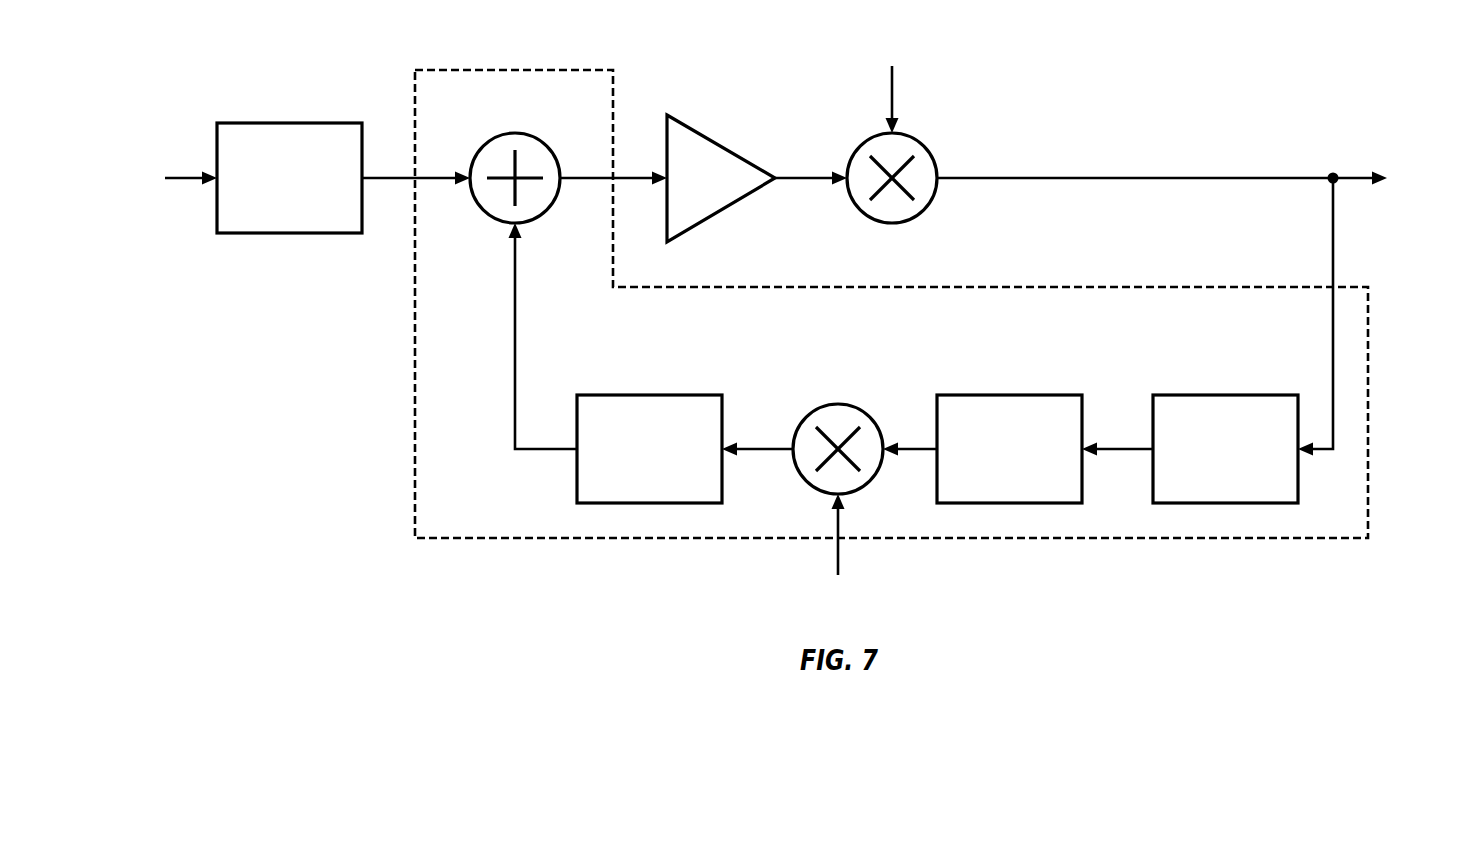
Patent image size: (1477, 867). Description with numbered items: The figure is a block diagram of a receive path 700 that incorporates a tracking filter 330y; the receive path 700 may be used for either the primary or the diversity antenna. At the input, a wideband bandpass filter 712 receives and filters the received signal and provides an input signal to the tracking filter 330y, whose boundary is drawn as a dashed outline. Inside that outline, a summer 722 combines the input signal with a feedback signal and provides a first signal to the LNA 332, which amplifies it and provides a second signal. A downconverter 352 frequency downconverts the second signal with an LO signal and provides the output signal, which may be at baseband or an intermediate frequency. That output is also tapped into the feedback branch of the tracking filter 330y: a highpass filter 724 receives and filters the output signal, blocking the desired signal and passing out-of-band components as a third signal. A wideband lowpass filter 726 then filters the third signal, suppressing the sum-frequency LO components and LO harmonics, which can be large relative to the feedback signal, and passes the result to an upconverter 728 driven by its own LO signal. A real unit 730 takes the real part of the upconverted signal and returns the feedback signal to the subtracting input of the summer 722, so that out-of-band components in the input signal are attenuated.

The receive path 700 is at (1392, 69).
The wideband bandpass filter 712 is at (285, 123).
The summer 722 is at (511, 124).
The LNA 332 is at (717, 142).
The downconverter 352 is at (921, 141).
The tracking filter 330y is at (926, 275).
The highpass filter 724 is at (1221, 395).
The wideband lowpass filter 726 is at (1004, 395).
The upconverter 728 is at (833, 403).
The real unit 730 is at (644, 395).